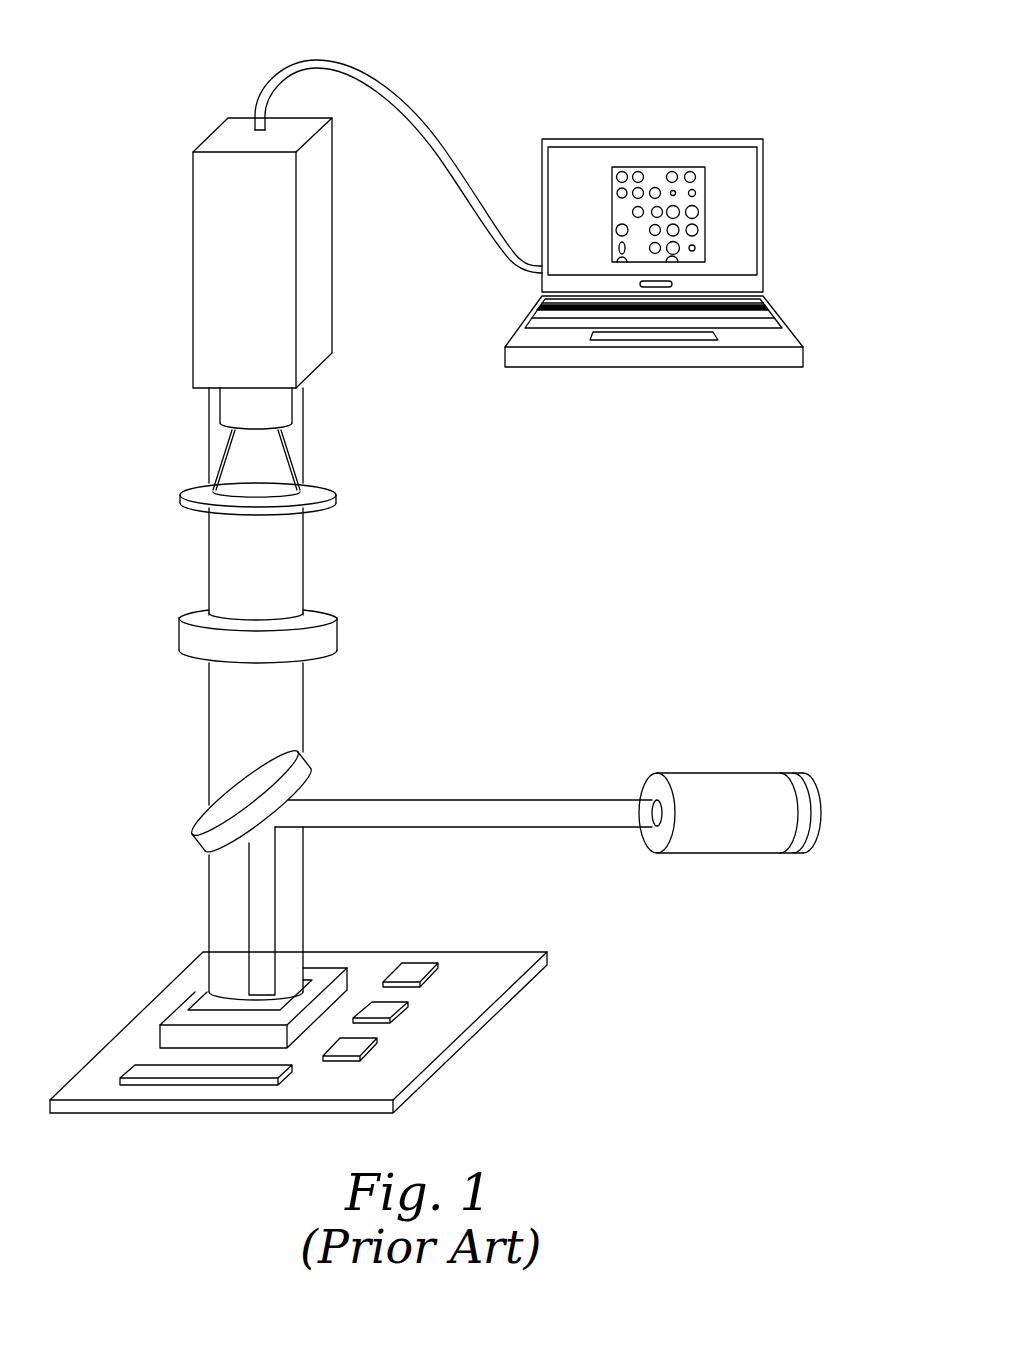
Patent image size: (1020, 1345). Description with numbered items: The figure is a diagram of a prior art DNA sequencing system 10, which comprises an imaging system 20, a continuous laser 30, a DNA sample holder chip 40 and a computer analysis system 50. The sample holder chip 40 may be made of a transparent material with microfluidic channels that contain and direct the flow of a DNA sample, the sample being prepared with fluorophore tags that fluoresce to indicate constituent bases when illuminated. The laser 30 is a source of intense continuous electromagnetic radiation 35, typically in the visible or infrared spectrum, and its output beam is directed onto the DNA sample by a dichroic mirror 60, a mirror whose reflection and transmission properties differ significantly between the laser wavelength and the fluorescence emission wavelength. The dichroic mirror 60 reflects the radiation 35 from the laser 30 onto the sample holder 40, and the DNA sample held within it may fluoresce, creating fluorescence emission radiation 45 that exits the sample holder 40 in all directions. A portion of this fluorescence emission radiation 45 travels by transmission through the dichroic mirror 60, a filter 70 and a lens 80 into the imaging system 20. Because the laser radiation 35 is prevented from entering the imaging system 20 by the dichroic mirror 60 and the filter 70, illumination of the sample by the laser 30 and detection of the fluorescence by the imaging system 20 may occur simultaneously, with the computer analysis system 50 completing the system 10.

The DNA sequencing system 10 is at (117, 86).
The imaging system 20 is at (218, 340).
The continuous laser 30 is at (712, 778).
The electromagnetic radiation 35 is at (472, 812).
The DNA sample holder chip 40 is at (183, 1018).
The fluorescence emission radiation 45 is at (205, 862).
The computer analysis system 50 is at (655, 137).
The dichroic mirror 60 is at (195, 825).
The filter 70 is at (177, 627).
The lens 80 is at (170, 504).